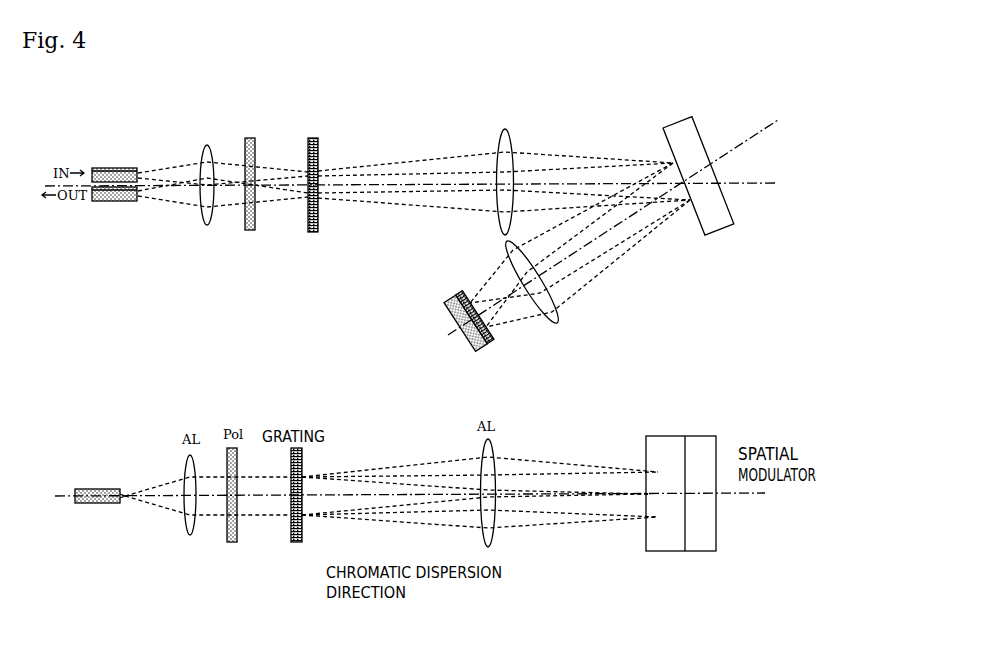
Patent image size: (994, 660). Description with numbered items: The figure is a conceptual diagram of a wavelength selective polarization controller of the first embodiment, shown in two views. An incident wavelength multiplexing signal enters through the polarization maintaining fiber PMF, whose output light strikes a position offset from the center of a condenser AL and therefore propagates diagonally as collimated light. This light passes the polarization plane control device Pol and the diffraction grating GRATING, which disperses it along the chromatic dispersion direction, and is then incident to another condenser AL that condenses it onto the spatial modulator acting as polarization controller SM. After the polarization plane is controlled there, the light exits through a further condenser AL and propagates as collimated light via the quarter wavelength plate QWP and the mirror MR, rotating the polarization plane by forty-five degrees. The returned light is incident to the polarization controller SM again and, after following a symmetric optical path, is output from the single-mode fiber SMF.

The polarization maintaining fiber PMF is at (114, 164).
The single-mode fiber SMF is at (114, 204).
The condenser AL is at (397, 217).
The polarization plane control device Pol is at (252, 173).
The diffraction grating GRATING is at (314, 175).
The polarization controller SM is at (755, 176).
The quarter wavelength plate QWP is at (469, 308).
The mirror MR is at (454, 323).